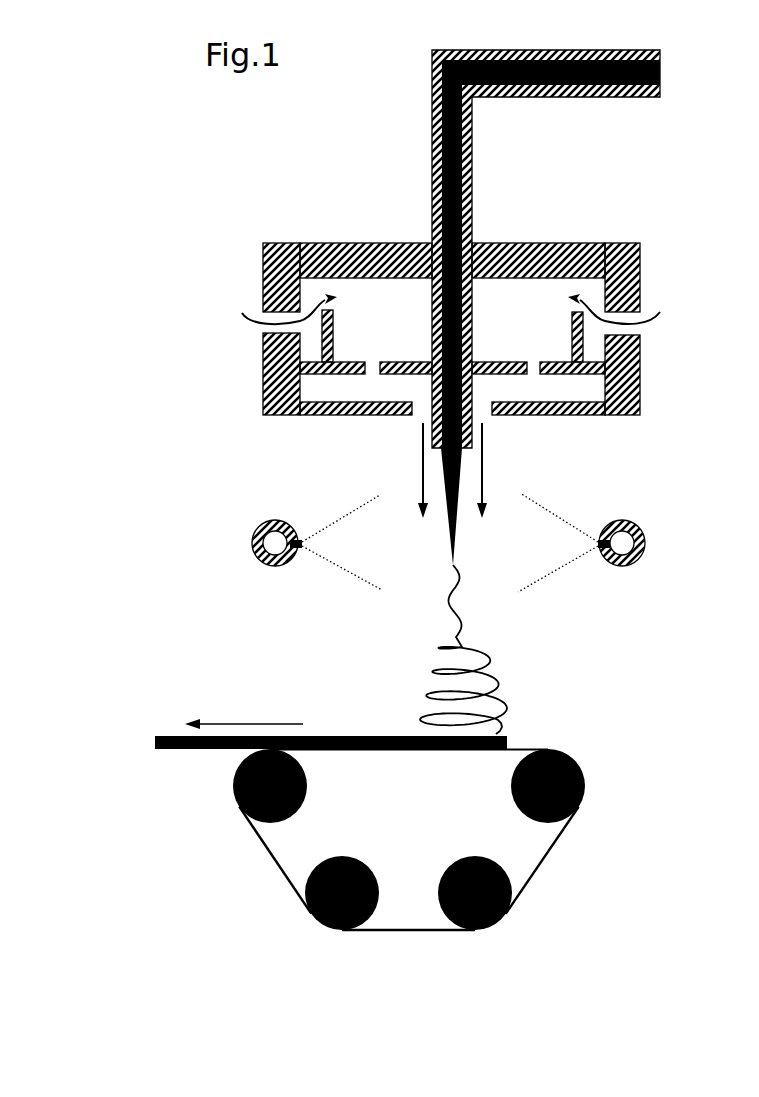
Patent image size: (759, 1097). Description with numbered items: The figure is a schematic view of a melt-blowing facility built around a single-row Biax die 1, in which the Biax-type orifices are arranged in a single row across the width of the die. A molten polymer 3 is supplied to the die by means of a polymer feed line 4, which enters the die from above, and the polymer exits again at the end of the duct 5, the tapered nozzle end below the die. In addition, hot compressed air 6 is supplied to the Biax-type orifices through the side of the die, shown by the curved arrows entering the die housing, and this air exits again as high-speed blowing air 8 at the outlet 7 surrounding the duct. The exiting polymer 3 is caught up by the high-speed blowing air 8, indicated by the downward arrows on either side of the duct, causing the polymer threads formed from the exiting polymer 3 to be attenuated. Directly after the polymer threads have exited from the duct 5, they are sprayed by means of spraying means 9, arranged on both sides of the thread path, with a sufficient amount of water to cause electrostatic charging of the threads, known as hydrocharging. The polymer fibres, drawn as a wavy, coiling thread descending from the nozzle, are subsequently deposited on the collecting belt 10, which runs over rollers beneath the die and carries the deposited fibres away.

The single-row Biax die 1 is at (587, 243).
The molten polymer 3 is at (660, 73).
The polymer feed line 4 is at (414, 168).
The duct 5 is at (472, 420).
The hot compressed air 6 is at (452, 326).
The outlet 7 is at (420, 407).
The high-speed blowing air 8 is at (484, 460).
The spraying means 9 is at (638, 530).
The collecting belt 10 is at (575, 757).